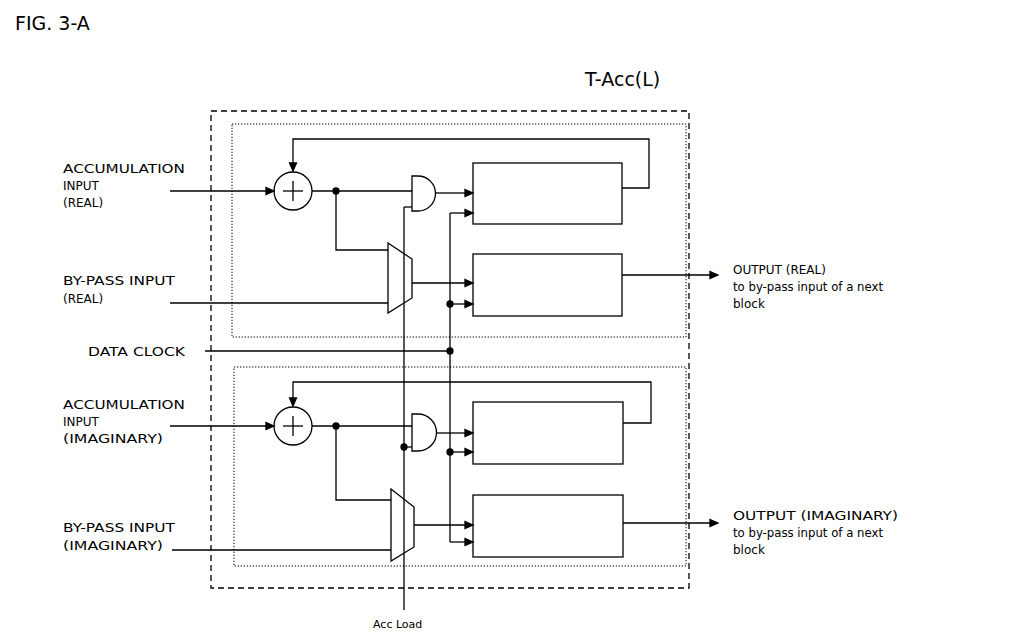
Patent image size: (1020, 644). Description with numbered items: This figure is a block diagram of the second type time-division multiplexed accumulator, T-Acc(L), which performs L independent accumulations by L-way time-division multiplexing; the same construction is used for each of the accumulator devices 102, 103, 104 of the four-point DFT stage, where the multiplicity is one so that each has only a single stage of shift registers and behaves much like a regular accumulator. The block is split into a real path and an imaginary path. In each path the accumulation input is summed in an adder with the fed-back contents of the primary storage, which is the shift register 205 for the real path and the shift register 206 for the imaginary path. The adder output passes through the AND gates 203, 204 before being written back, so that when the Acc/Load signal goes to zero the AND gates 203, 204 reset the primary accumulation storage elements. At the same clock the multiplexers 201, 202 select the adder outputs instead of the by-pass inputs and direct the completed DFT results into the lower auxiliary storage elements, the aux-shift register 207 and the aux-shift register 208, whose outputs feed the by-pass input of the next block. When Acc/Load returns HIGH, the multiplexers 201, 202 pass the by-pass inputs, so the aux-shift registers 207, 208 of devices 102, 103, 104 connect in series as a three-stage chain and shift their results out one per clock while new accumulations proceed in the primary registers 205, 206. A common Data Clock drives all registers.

The time-division multiplexed accumulator T-Acc(1) 102 is at (392, 314).
The time-division multiplexed accumulator T-Acc(1) 103 is at (392, 327).
The time-division multiplexed accumulator T-Acc(1) 104 is at (182, 118).
The multiplexer 201 is at (388, 274).
The multiplexer 202 is at (391, 531).
The AND gate 203 is at (412, 178).
The AND gate 204 is at (412, 416).
The shift register (real) 205 is at (622, 213).
The shift register (imaginary) 206 is at (623, 451).
The auxiliary shift register (real) 207 is at (622, 258).
The auxiliary shift register (imaginary) 208 is at (623, 497).